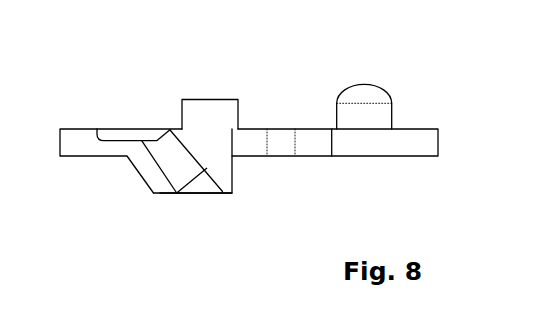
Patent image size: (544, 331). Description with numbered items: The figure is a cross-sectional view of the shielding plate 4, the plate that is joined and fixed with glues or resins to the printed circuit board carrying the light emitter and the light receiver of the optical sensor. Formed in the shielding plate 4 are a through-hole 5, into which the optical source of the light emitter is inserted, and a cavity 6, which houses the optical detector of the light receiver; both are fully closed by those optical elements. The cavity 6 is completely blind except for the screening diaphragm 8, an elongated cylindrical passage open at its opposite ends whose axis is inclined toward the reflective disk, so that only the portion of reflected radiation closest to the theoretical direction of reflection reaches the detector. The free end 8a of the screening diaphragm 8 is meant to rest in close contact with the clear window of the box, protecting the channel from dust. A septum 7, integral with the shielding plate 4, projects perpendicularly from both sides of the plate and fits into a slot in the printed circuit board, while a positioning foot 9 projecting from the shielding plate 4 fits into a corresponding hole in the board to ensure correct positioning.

The shielding plate 4 is at (417, 150).
The through-hole 5 is at (315, 142).
The cavity 6 is at (117, 131).
The septum 7 is at (200, 117).
The screening diaphragm 8 is at (168, 167).
The free end 8a is at (186, 192).
The positioning foot 9 is at (372, 83).